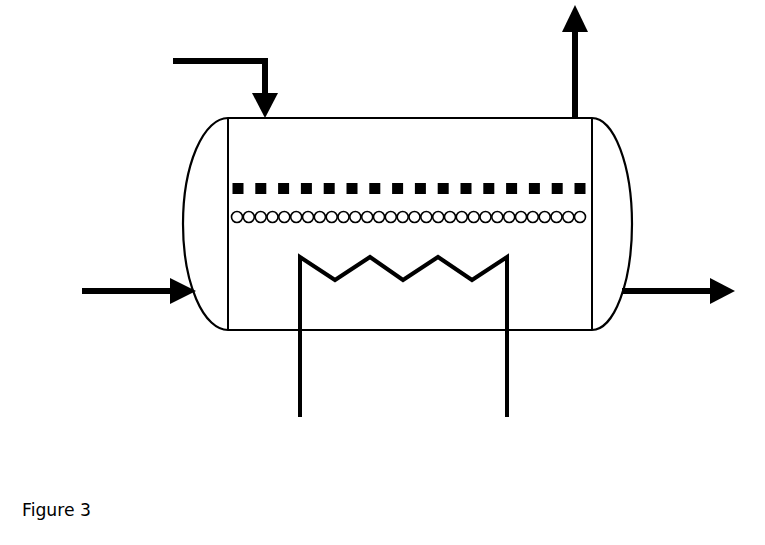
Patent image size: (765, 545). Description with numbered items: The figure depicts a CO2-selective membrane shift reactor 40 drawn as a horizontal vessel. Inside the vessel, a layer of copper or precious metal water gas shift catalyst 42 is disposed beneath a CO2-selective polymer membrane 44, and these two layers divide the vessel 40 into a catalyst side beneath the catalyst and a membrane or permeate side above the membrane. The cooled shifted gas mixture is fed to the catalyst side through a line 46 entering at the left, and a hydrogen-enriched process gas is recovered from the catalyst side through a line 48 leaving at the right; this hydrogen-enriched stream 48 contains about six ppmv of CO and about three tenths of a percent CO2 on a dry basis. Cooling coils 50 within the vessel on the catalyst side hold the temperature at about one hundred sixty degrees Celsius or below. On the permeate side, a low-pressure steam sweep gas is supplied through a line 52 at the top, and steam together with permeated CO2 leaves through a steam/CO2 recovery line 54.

The CO2-selective membrane shift reactor 40 is at (608, 200).
The water gas shift catalyst 42 is at (238, 213).
The CO2-selective polymer membrane 44 is at (257, 184).
The line 46 is at (140, 292).
The line 48 is at (641, 293).
The cooling coils 50 is at (302, 404).
The line 52 is at (233, 60).
The steam/CO2 recovery line 54 is at (580, 62).